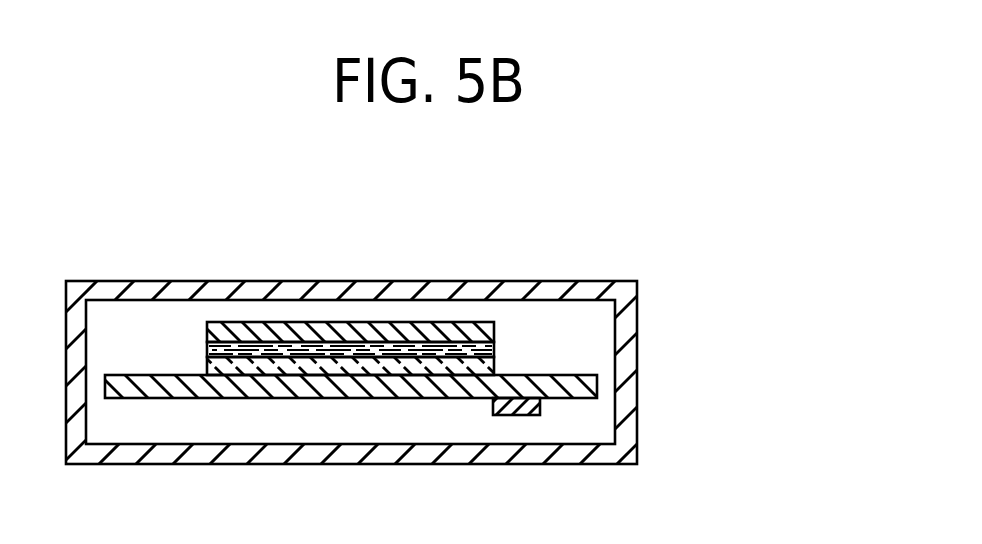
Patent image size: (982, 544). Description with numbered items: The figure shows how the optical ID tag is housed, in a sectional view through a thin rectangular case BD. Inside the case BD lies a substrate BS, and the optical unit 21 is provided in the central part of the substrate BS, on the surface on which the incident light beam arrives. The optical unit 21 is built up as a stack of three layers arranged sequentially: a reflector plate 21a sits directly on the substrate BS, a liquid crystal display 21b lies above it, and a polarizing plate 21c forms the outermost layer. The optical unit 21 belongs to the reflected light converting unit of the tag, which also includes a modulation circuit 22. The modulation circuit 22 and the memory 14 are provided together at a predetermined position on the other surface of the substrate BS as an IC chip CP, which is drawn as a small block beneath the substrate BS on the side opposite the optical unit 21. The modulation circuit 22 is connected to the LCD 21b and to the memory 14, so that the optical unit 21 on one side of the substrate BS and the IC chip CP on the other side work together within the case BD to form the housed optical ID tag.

The optical unit 21 is at (508, 301).
The reflector plate 21a is at (495, 358).
The liquid crystal display (LCD) 21b is at (495, 340).
The polarizing plate 21c is at (495, 322).
The substrate BS is at (597, 378).
The thin rectangular case BD is at (637, 445).
The IC chip CP is at (518, 465).
The memory 14 is at (520, 406).
The modulation circuit 22 is at (518, 415).